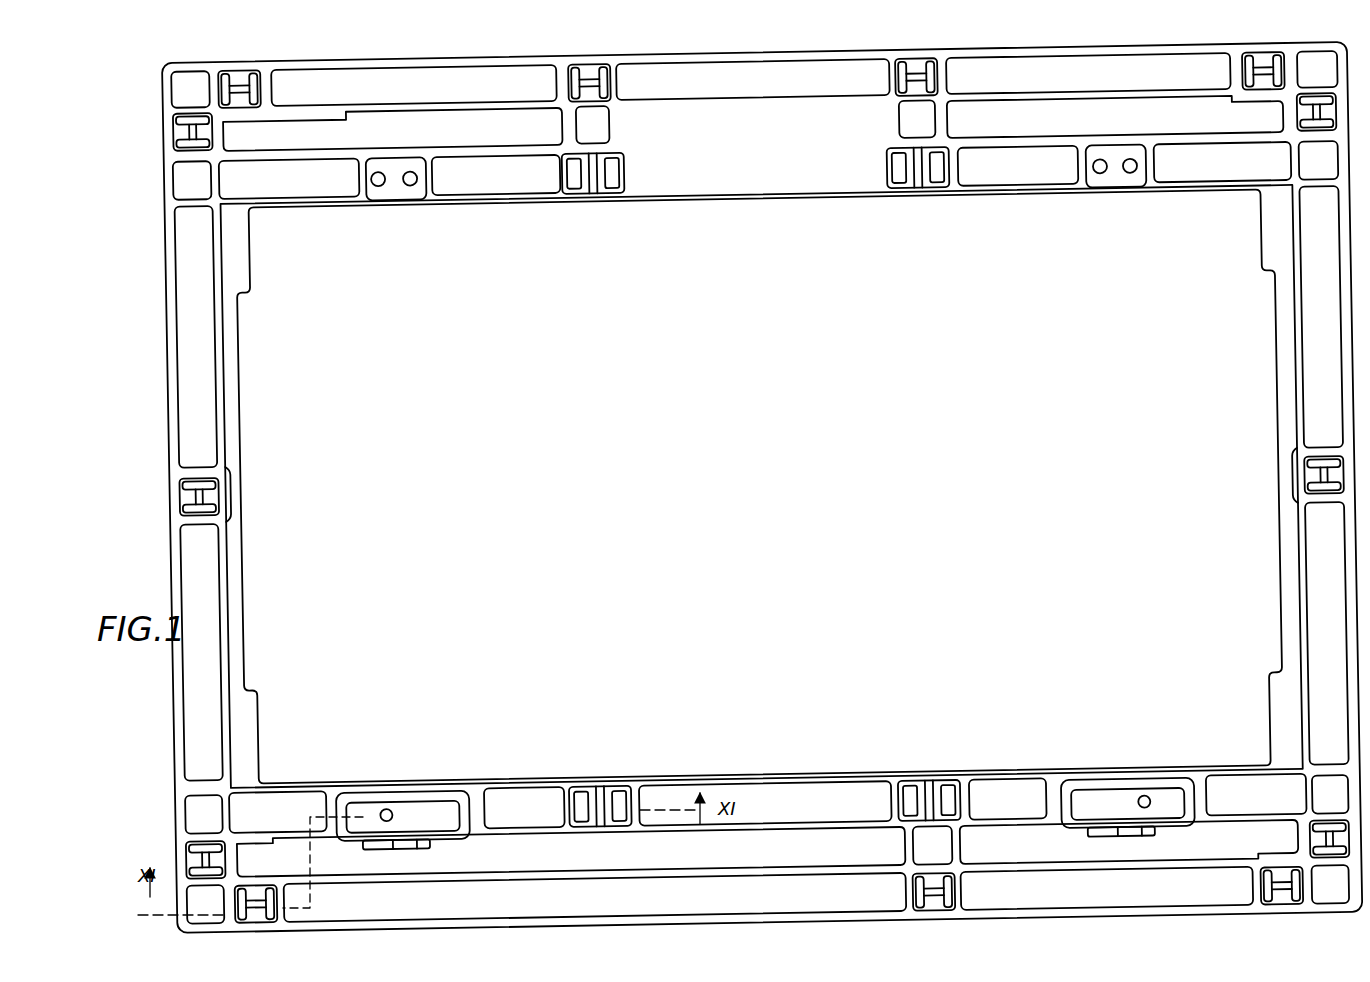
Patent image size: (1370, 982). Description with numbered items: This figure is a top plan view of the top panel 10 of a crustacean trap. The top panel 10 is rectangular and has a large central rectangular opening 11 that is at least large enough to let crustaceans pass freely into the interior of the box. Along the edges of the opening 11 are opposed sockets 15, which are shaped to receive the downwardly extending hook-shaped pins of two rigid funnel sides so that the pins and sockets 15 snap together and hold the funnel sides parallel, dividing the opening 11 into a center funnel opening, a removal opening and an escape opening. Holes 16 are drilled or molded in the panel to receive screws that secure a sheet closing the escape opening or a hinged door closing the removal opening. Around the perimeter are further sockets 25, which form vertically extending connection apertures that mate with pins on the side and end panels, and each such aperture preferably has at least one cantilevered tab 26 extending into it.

The top panel 10 is at (270, 407).
The central rectangular opening 11 is at (742, 491).
The socket 15 is at (588, 207).
The hole 16 is at (408, 190).
The socket 25 is at (200, 140).
The cantilevered tab 26 is at (202, 140).